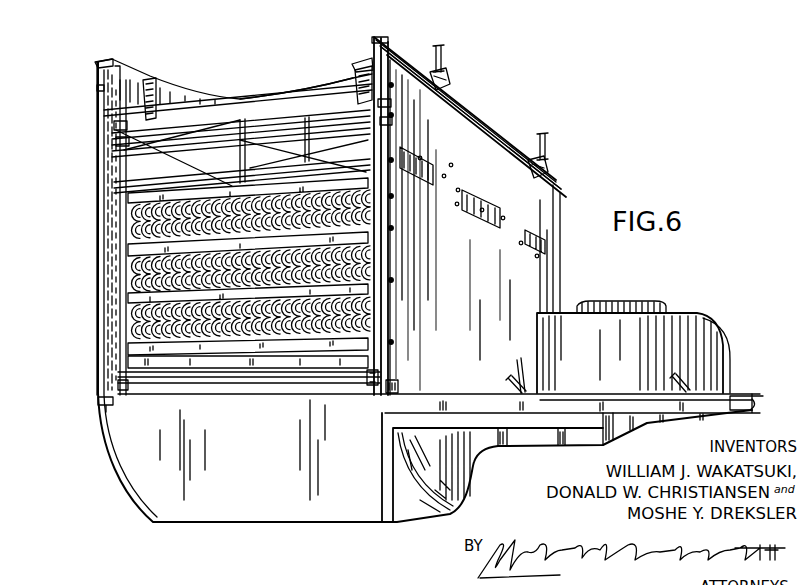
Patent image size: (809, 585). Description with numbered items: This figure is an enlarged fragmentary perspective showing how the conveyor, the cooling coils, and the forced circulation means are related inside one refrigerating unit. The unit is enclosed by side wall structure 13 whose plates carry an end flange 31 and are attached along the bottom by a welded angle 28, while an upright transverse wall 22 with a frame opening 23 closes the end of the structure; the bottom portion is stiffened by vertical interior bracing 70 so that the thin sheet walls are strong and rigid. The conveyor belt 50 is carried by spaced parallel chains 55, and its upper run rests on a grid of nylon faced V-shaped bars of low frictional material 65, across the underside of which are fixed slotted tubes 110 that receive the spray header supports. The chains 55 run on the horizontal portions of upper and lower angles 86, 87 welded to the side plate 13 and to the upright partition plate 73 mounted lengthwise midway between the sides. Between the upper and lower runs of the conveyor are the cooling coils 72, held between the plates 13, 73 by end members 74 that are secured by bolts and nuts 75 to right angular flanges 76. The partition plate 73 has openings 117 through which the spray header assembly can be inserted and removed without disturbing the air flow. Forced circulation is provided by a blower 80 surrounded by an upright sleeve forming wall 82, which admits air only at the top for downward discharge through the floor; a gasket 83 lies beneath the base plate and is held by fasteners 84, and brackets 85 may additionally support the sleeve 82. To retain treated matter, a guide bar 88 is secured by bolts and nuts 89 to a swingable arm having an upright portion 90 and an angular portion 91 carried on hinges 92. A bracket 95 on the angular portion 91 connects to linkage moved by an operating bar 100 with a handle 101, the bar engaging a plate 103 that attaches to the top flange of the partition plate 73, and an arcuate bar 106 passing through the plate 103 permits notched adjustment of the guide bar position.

The side wall structure 13 is at (121, 296).
The upright transverse wall 22 is at (257, 522).
The frame opening 23 is at (447, 427).
The angle 28 is at (103, 406).
The end flange 31 is at (104, 262).
The conveyor belt 50 is at (232, 124).
The chain 55 is at (127, 150).
The low frictional material bars 65 is at (250, 130).
The vertical interior bracing 70 is at (498, 447).
The cooling coil 72 is at (127, 232).
The upright partition plate 73 is at (484, 290).
The end member 74 is at (176, 366).
The bolts and nuts 75 is at (128, 167).
The right angular flange 76 is at (130, 346).
The blower 80 is at (640, 296).
The upright sleeve forming wall 82 is at (706, 320).
The gasket 83 is at (627, 393).
The fastener 84 is at (509, 388).
The bracket 85 is at (519, 368).
The upper angle 86 is at (118, 141).
The lower angle 87 is at (119, 385).
The guide bar 88 is at (115, 125).
The bolts and nuts 89 is at (149, 102).
The upright portion 90 is at (112, 82).
The angular portion 91 is at (367, 70).
The hinge 92 is at (100, 88).
The bracket 95 is at (158, 118).
The operating bar 100 is at (231, 102).
The handle 101 is at (448, 58).
The plate 103 is at (478, 131).
The arcuate bar 106 is at (449, 83).
The slotted tube 110 is at (206, 172).
The opening 117 is at (487, 220).